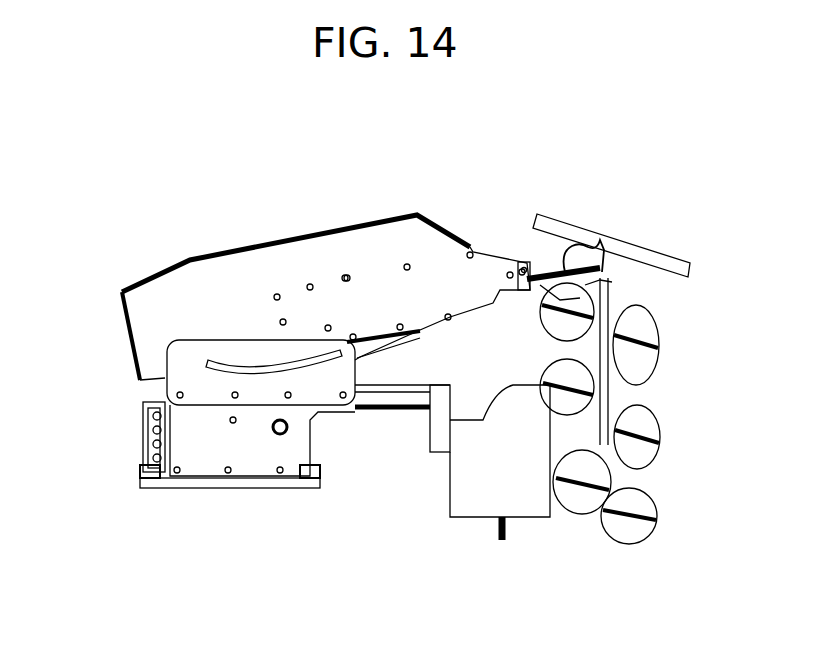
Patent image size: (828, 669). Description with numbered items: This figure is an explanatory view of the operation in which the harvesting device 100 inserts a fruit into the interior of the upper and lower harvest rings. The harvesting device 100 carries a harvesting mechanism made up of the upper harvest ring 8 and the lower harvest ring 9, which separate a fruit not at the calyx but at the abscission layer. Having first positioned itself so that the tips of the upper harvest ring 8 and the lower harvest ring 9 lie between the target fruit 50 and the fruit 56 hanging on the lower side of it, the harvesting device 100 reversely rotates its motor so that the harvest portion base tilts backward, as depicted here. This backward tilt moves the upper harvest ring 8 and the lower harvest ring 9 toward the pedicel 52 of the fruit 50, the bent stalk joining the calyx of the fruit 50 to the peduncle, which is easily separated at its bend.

The harvesting device 100 is at (88, 232).
The fruit 50 is at (562, 297).
The pedicel 52 is at (573, 247).
The upper harvest ring 8 is at (600, 262).
The lower harvest ring 9 is at (600, 275).
The fruit 56 is at (562, 400).